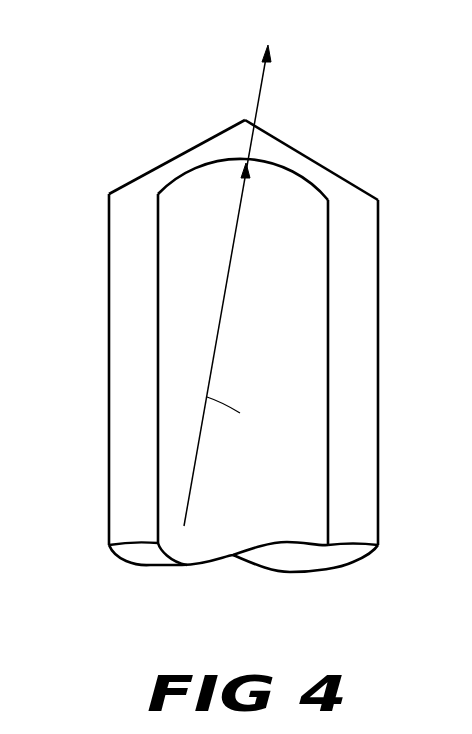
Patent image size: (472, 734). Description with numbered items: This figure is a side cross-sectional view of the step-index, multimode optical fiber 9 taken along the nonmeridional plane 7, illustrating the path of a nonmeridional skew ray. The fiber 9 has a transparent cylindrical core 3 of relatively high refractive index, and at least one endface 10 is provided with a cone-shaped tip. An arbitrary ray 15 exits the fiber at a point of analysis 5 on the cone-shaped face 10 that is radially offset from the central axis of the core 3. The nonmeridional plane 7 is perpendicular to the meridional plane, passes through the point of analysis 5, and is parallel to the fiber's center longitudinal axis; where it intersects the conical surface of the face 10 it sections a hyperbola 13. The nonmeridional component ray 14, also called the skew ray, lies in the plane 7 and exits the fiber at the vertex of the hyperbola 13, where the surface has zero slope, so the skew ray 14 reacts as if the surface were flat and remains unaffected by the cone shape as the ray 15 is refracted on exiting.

The core 3 is at (108, 332).
The point of analysis 5 is at (242, 158).
The nonmeridional plane 7 is at (328, 412).
The optical fiber 9 is at (105, 452).
The endface 10 is at (162, 165).
The hyperbola 13 is at (298, 173).
The nonmeridional component ray 14 is at (238, 420).
The ray 15 is at (260, 82).